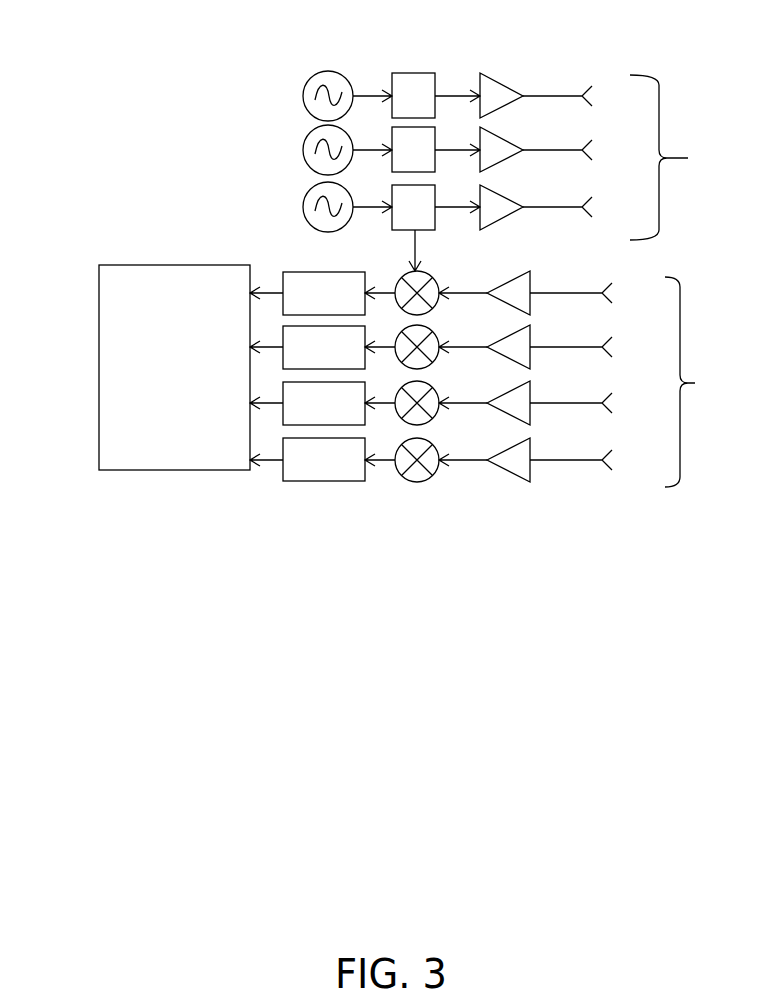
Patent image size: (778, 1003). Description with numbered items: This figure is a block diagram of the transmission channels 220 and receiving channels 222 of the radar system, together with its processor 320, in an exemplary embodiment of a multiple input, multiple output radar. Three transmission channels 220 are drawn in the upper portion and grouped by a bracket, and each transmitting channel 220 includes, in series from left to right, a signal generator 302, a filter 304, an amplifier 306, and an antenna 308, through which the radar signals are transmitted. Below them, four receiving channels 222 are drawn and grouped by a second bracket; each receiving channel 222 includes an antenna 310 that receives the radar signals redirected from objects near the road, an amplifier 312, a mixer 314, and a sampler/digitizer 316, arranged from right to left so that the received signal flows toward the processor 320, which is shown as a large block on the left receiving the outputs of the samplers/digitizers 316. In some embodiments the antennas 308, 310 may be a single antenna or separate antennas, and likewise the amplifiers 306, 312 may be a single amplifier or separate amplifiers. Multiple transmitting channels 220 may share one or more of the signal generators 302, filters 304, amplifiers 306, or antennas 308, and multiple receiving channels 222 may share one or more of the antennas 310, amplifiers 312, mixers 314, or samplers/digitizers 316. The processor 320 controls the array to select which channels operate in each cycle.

The signal generator 302 is at (303, 96).
The filter 304 is at (413, 73).
The amplifier 306 is at (508, 83).
The antenna 308 is at (593, 86).
The transmitting channel 220 is at (685, 157).
The receiving channel 222 is at (707, 382).
The antenna 310 is at (617, 473).
The amplifier 312 is at (520, 478).
The mixer 314 is at (422, 482).
The sampler/digitizer 316 is at (310, 484).
The processor 320 is at (99, 370).